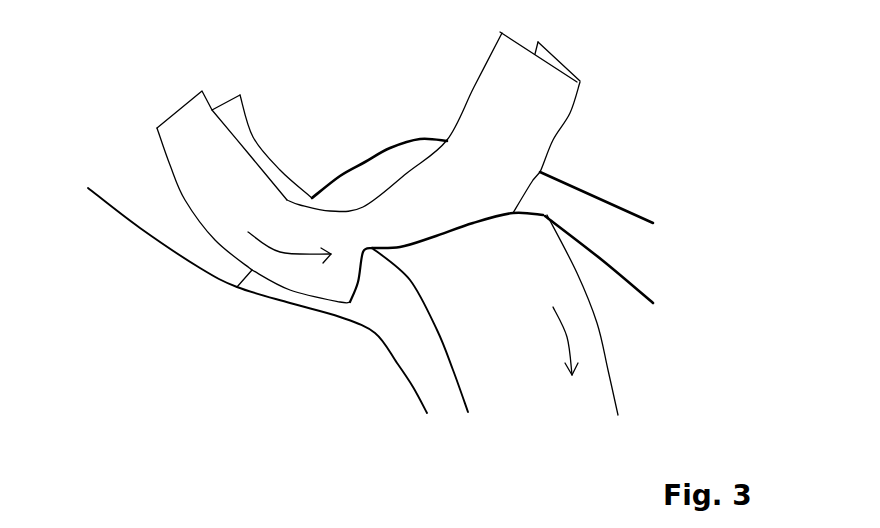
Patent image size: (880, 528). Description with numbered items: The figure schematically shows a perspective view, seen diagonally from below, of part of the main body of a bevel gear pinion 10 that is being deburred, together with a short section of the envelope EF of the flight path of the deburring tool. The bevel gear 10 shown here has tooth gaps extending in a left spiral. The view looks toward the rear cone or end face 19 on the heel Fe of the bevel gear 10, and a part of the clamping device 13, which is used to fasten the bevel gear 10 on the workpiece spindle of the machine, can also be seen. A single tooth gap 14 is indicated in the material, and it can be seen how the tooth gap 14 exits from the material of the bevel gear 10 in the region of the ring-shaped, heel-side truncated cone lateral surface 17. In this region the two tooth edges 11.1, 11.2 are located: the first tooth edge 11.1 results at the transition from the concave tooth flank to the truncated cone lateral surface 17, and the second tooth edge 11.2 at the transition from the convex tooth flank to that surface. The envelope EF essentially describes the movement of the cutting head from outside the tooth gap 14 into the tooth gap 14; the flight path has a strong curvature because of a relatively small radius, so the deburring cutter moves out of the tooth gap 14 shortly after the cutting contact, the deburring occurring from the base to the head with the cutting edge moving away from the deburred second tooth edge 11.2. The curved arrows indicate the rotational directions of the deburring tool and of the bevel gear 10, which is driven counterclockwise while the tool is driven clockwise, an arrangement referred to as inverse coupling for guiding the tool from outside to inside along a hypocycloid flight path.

The bevel gear pinion 10 is at (58, 62).
The first tooth edge 11.1 is at (363, 207).
The second tooth edge 11.2 is at (481, 218).
The clamping device 13 is at (272, 392).
The tooth gap 14 is at (623, 240).
The truncated cone lateral surface 17 is at (533, 397).
The rear cone / end face 19 is at (442, 392).
The inlet blade (entry face) EF is at (558, 112).
The heel Fe is at (378, 283).